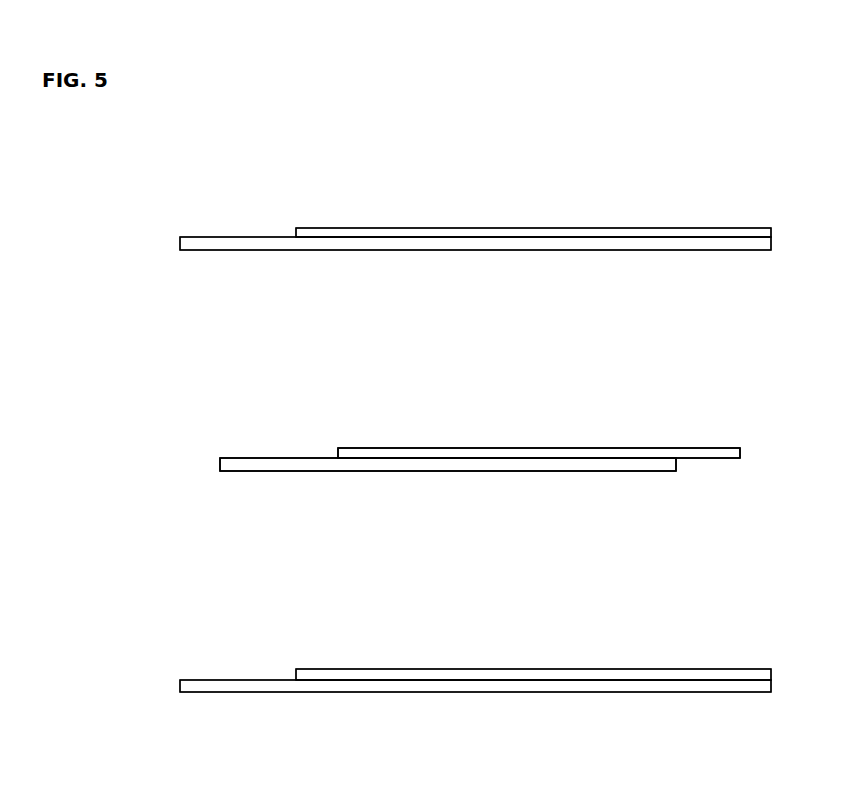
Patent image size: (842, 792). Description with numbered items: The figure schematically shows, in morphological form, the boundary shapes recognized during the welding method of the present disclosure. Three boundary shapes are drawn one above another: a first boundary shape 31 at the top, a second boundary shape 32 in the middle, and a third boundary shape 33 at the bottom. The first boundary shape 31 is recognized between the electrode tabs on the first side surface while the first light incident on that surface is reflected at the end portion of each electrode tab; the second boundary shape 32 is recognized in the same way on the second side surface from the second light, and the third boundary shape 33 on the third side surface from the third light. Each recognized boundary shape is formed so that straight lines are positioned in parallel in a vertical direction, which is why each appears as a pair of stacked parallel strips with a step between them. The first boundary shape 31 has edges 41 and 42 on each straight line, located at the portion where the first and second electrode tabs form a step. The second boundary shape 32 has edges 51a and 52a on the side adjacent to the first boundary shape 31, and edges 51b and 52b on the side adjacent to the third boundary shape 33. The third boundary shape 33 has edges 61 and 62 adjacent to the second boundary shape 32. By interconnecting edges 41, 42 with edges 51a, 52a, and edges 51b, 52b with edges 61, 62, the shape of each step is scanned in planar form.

The first boundary shape 31 is at (178, 218).
The edge of straight line of first boundary shape 41 is at (190, 247).
The edge of straight line of first boundary shape 42 is at (305, 229).
The second boundary shape 32 is at (222, 428).
The edge of straight line of second boundary shape 51a is at (228, 465).
The edge of straight line of second boundary shape 51b is at (665, 465).
The edge of straight line of second boundary shape 52a is at (340, 450).
The edge of straight line of second boundary shape 52b is at (736, 452).
The third boundary shape 33 is at (190, 660).
The edge of straight line of third boundary shape 61 is at (192, 690).
The edge of straight line of third boundary shape 62 is at (305, 670).